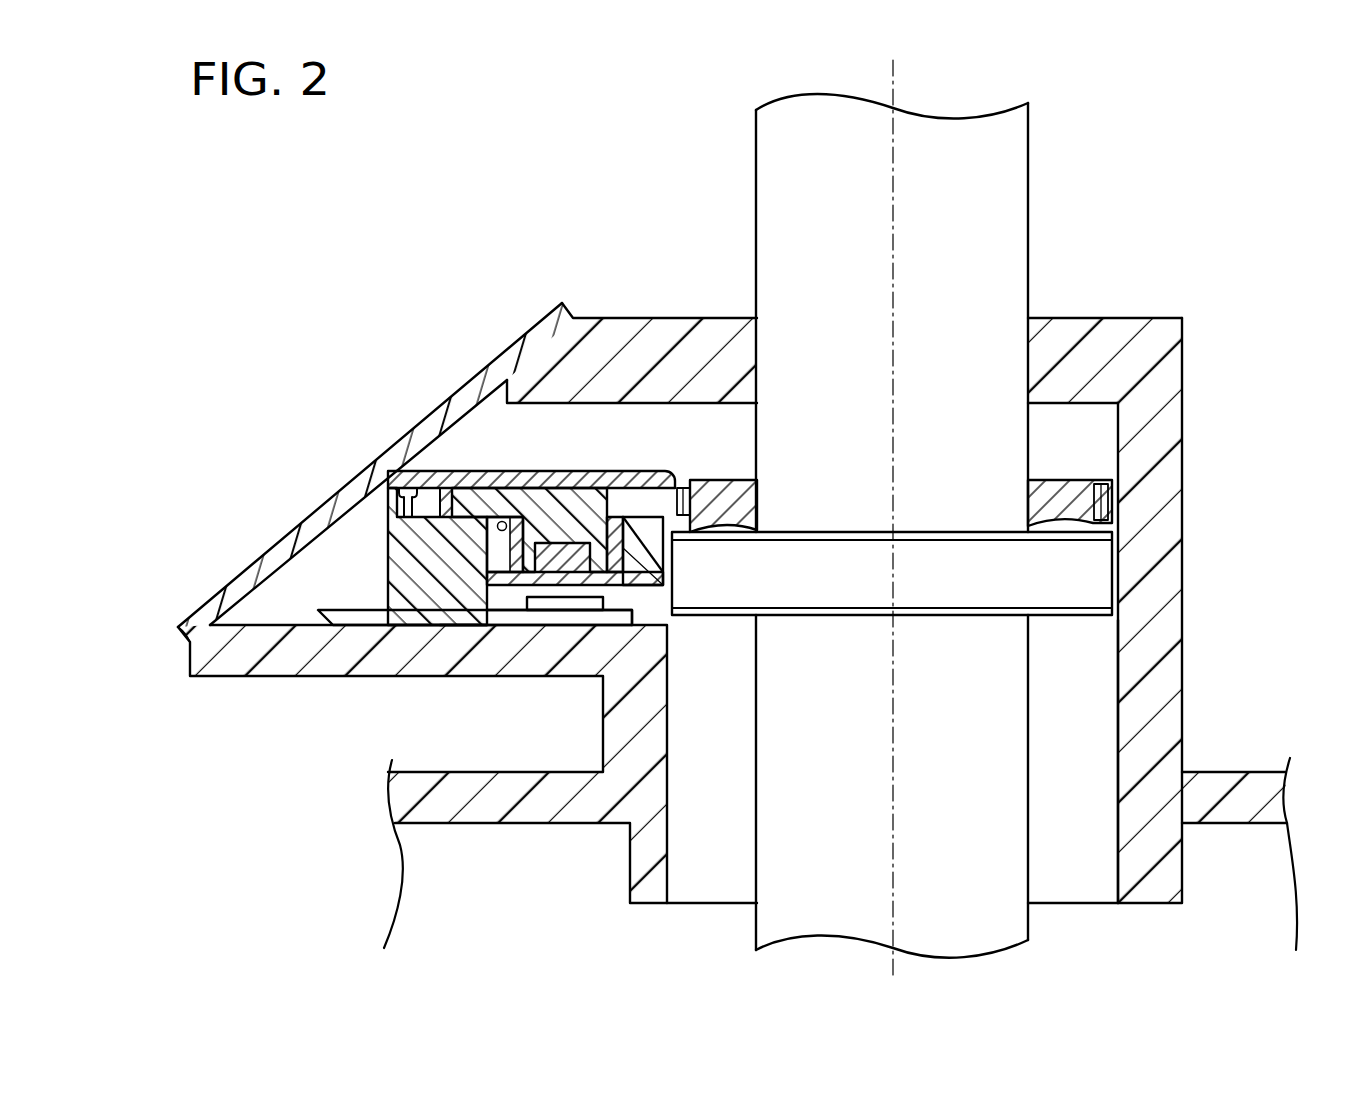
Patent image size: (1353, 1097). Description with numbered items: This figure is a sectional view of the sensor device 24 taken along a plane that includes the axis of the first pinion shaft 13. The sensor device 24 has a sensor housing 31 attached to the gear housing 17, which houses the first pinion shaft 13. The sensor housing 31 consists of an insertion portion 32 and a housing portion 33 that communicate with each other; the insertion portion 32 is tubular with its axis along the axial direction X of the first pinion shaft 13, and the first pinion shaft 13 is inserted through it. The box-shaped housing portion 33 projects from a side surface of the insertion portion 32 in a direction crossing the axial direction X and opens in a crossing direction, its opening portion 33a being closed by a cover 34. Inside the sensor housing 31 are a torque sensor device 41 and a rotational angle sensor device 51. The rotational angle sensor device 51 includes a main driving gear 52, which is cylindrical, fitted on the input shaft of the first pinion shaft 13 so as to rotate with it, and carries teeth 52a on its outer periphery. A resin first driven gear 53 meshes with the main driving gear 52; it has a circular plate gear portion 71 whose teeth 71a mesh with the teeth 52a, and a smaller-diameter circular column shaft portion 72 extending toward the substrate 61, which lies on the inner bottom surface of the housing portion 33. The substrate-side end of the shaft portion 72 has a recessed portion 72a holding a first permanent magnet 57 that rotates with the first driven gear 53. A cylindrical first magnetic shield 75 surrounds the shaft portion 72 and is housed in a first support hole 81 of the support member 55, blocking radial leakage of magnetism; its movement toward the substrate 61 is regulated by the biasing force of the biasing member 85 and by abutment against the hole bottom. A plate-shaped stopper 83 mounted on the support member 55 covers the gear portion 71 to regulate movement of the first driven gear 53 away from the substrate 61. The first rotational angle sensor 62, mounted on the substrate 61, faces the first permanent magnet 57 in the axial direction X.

The first pinion shaft 13 is at (1028, 155).
The gear housing 17 is at (1218, 772).
The sensor device 24 is at (1190, 296).
The sensor housing 31 is at (1184, 665).
The insertion portion 32 is at (1117, 765).
The housing portion 33 is at (326, 680).
The opening portion 33a is at (178, 628).
The cover 34 is at (513, 344).
The torque sensor device 41 is at (731, 622).
The rotational angle sensor device 51 is at (522, 557).
The main driving gear 52 is at (1052, 480).
The teeth 52a is at (1123, 498).
The first driven gear 53 is at (537, 471).
The support member 55 is at (388, 528).
The first permanent magnet 57 is at (668, 548).
The substrate 61 is at (330, 612).
The first rotational angle sensor 62 is at (517, 612).
The gear portion 71 is at (652, 485).
The teeth 71a is at (437, 470).
The shaft portion 72 is at (668, 582).
The recessed portion 72a is at (545, 611).
The first magnetic shield 75 is at (455, 614).
The first support hole 81 is at (488, 530).
The stopper 83 is at (452, 490).
The biasing member 85 is at (414, 492).
The axial direction X is at (895, 70).